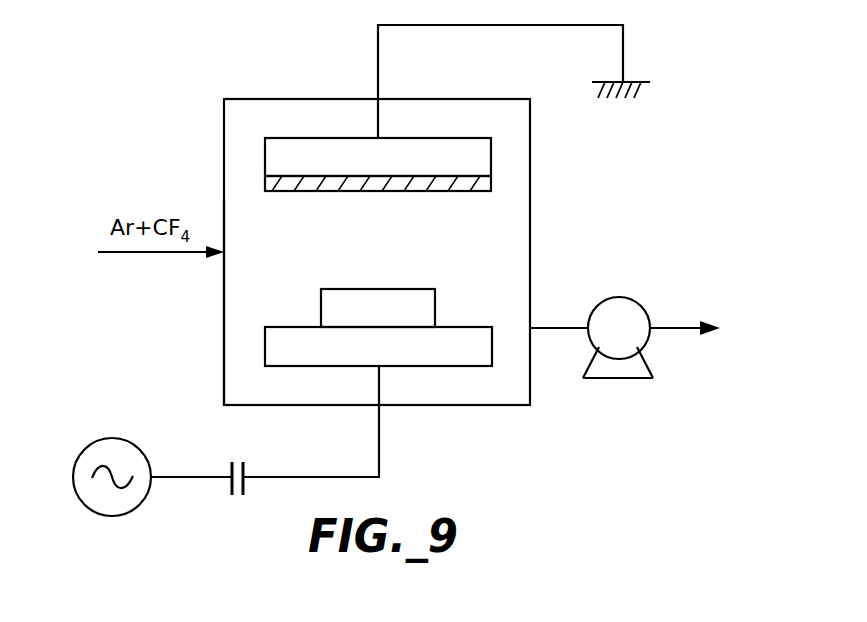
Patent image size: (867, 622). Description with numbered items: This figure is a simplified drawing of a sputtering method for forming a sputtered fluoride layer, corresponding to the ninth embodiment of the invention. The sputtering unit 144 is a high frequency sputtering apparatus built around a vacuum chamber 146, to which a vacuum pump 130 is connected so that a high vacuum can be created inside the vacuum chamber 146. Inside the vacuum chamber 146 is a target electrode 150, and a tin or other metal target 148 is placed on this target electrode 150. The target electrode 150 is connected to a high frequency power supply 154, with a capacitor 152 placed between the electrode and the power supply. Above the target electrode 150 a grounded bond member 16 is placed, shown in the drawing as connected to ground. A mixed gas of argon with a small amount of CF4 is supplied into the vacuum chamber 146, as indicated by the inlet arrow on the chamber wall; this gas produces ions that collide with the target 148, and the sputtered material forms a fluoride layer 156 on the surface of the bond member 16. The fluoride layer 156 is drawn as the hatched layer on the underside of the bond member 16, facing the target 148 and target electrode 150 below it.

The sputtering unit 144 is at (248, 82).
The vacuum chamber 146 is at (223, 342).
The bond member 16 is at (440, 147).
The fluoride layer 156 is at (265, 183).
The target 148 is at (408, 315).
The target electrode 150 is at (322, 352).
The capacitor 152 is at (233, 497).
The high frequency power supply 154 is at (110, 438).
The vacuum pump 130 is at (617, 296).